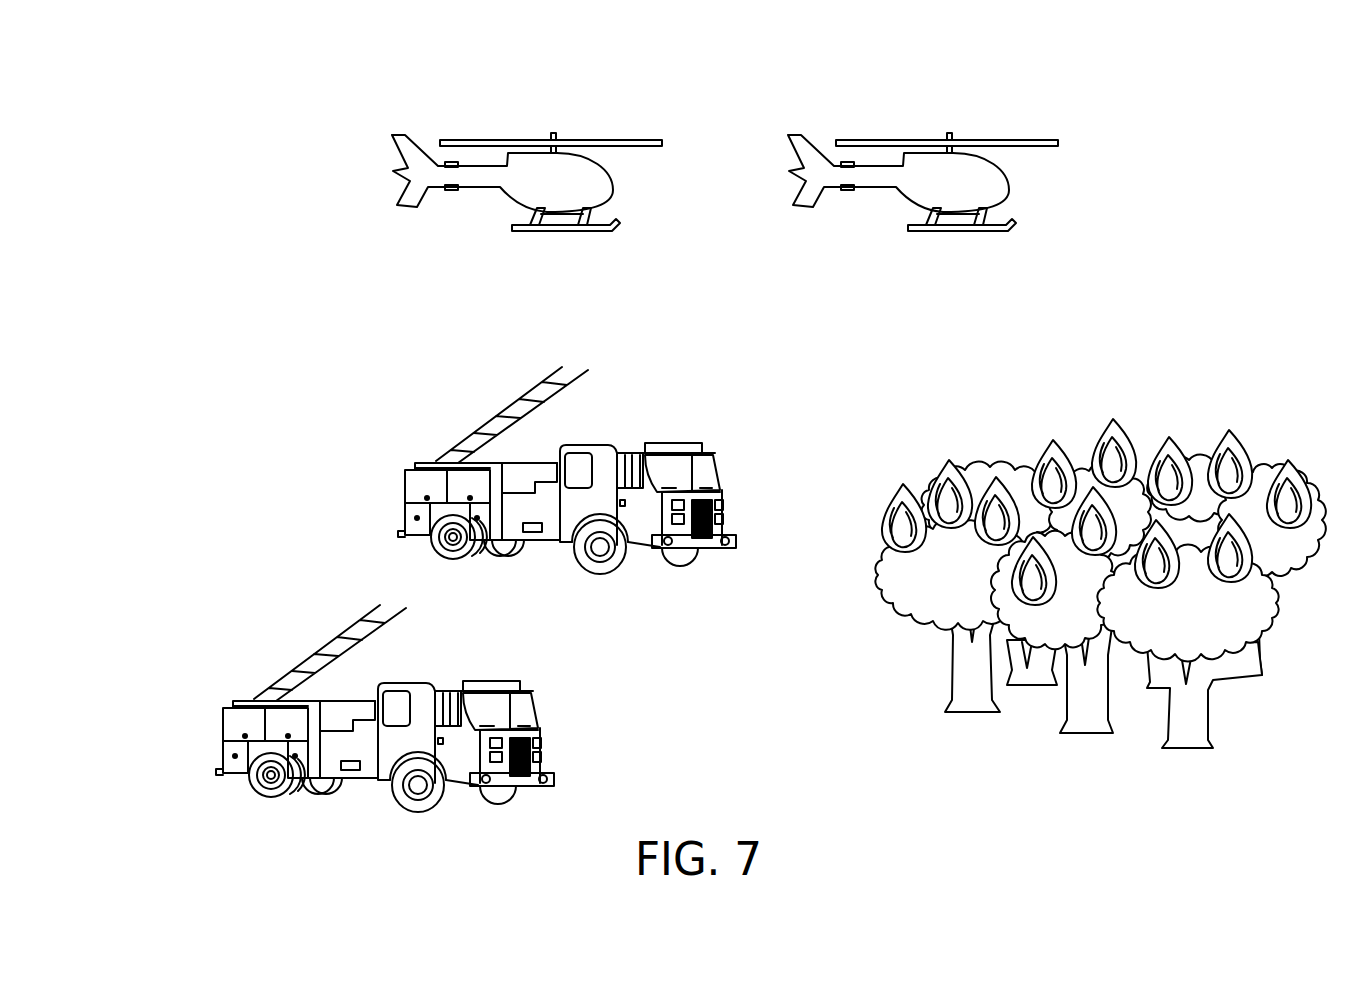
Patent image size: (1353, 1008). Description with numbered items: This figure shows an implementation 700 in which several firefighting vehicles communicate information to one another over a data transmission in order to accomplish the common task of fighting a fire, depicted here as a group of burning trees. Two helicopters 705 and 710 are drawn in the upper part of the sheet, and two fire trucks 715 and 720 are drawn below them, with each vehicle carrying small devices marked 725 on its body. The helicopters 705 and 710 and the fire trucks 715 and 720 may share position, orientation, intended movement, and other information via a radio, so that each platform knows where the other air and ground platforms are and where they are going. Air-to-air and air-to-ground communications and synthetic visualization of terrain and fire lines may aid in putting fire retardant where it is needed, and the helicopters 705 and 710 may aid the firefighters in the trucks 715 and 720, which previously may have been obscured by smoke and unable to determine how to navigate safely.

The implementation 700 is at (172, 110).
The helicopter 705 is at (601, 181).
The helicopter 710 is at (997, 181).
The fire truck 715 is at (603, 455).
The fire truck 720 is at (420, 693).
The sensor device 725 is at (446, 162).